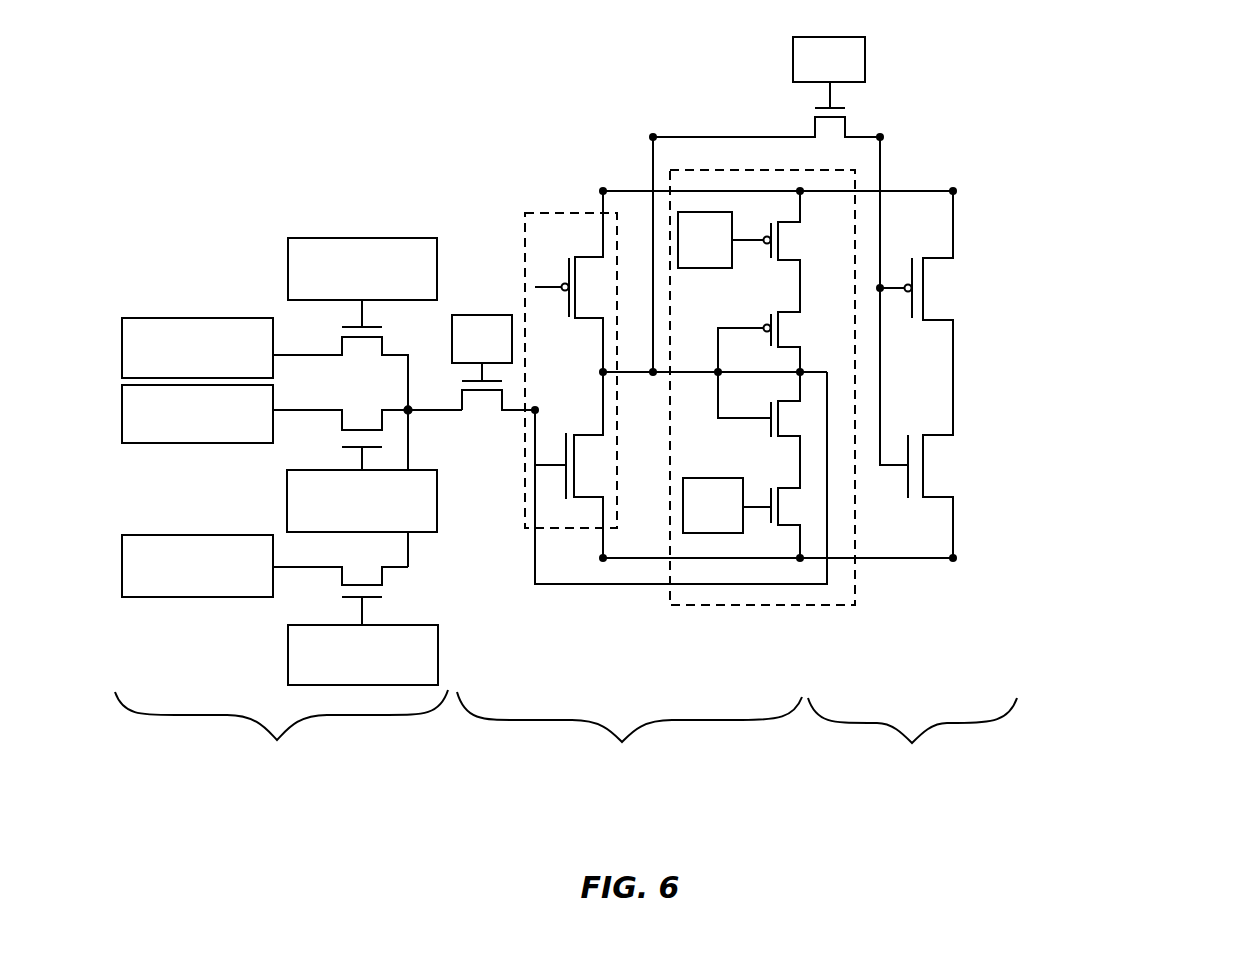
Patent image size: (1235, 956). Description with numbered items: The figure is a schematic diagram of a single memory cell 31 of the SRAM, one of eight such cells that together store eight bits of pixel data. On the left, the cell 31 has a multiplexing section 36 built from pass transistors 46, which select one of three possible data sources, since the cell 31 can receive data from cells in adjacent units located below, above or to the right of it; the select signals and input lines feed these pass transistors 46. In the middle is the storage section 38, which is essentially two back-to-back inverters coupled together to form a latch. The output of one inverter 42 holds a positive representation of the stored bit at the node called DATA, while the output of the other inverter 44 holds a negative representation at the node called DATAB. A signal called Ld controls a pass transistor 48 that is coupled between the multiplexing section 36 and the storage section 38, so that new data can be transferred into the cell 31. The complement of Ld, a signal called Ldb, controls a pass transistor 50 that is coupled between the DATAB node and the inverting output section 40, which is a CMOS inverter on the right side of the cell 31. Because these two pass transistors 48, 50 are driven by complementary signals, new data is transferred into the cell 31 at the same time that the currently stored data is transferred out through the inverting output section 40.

The cell 31 is at (1115, 229).
The multiplexing section 36 is at (288, 525).
The storage section 38 is at (693, 426).
The inverting output section 40 is at (919, 476).
The inverter 42 is at (742, 347).
The inverter 44 is at (554, 358).
The pass transistors 46 is at (342, 337).
The pass transistor 48 is at (482, 402).
The pass transistor 50 is at (848, 128).